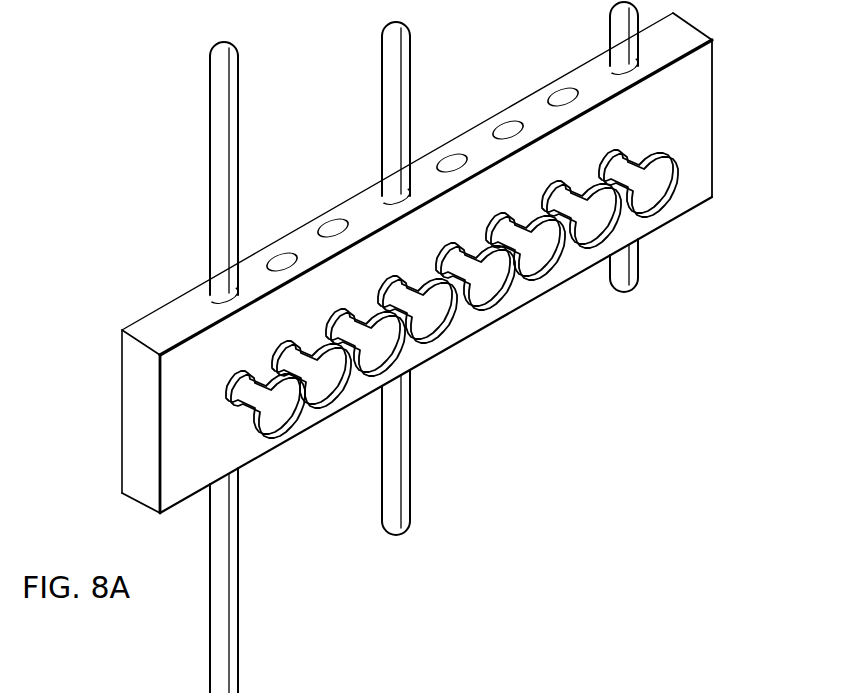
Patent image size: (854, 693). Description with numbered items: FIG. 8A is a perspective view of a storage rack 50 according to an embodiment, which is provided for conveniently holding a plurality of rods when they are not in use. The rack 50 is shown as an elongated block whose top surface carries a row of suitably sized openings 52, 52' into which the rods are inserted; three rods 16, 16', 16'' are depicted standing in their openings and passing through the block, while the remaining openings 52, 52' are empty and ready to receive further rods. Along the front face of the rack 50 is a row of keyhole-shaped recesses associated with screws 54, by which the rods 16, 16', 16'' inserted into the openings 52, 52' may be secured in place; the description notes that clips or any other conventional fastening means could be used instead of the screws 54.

The rod 16 is at (249, 367).
The rod 16' is at (426, 278).
The rod 16'' is at (588, 147).
The storage rack 50 is at (695, 108).
The opening 52 is at (506, 130).
The opening 52' is at (307, 216).
The screw 54 is at (660, 197).